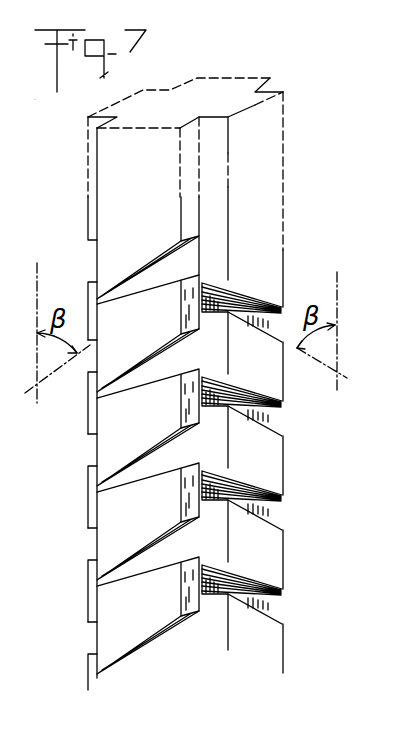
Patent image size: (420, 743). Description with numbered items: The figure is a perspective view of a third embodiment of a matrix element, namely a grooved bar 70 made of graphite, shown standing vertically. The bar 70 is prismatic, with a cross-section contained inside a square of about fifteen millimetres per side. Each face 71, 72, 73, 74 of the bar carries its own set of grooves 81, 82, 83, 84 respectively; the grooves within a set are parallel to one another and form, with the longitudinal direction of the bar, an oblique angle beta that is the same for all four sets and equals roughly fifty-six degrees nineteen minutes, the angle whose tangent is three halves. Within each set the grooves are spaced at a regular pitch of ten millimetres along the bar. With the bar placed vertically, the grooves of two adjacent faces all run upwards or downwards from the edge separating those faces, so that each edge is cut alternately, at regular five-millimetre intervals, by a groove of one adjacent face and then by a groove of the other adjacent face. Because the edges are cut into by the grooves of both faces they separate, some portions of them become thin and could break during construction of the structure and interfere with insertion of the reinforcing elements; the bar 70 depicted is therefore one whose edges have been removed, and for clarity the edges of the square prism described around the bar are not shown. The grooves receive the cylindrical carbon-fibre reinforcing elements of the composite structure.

The grooved bar 70 is at (302, 161).
The face of the bar 71 is at (110, 548).
The face of the bar 72 is at (285, 249).
The face of the bar 73 is at (268, 565).
The face of the bar 74 is at (97, 320).
The set of grooves 81 is at (97, 599).
The set of grooves 82 is at (283, 424).
The set of grooves 83 is at (245, 497).
The set of grooves 84 is at (97, 453).